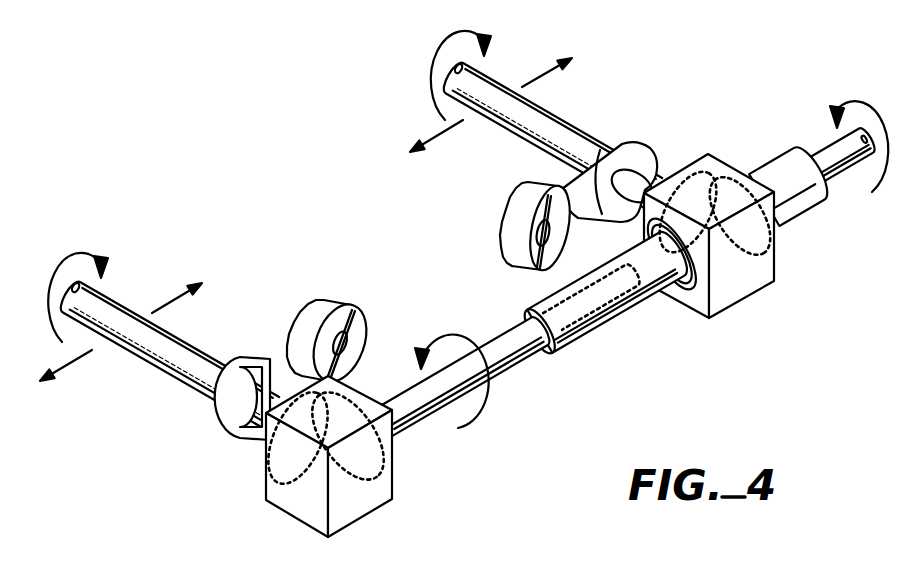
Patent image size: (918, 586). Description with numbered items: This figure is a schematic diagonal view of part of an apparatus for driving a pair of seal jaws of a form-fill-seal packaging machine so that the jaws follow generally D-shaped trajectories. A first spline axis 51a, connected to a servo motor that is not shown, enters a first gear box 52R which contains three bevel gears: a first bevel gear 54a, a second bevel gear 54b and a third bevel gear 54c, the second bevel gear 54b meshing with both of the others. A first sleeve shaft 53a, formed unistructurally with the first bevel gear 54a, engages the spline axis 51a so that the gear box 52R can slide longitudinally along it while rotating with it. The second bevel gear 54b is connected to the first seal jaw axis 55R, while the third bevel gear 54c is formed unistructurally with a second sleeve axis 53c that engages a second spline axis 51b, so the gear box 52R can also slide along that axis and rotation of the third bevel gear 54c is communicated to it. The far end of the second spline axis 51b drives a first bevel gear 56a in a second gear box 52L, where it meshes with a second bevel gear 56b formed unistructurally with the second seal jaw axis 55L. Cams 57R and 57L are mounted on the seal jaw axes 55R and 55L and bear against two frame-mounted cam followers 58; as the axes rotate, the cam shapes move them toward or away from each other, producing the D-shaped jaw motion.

The first spline axis 51a is at (833, 163).
The second spline axis 51b is at (503, 381).
The second gear box 52L is at (293, 510).
The first gear box 52R is at (752, 280).
The first sleeve shaft 53a is at (797, 220).
The second sleeve axis 53c is at (636, 326).
The first bevel gear 54a is at (733, 163).
The second bevel gear 54b is at (687, 165).
The third bevel gear 54c is at (692, 300).
The second seal jaw axis 55L is at (155, 372).
The first seal jaw axis 55R is at (566, 135).
The first bevel gear of the second gear box 56a is at (393, 447).
The second bevel gear of the second gear box 56b is at (275, 486).
The cam 57L is at (278, 360).
The cam 57R is at (613, 137).
The cam follower 58 is at (520, 202).